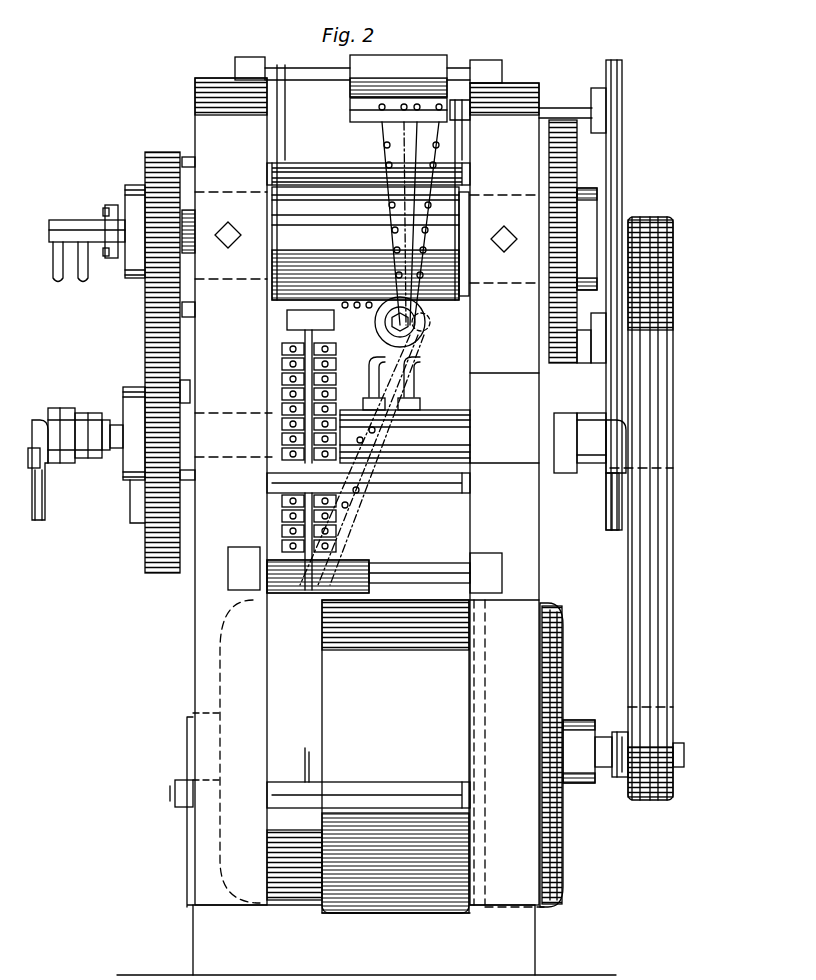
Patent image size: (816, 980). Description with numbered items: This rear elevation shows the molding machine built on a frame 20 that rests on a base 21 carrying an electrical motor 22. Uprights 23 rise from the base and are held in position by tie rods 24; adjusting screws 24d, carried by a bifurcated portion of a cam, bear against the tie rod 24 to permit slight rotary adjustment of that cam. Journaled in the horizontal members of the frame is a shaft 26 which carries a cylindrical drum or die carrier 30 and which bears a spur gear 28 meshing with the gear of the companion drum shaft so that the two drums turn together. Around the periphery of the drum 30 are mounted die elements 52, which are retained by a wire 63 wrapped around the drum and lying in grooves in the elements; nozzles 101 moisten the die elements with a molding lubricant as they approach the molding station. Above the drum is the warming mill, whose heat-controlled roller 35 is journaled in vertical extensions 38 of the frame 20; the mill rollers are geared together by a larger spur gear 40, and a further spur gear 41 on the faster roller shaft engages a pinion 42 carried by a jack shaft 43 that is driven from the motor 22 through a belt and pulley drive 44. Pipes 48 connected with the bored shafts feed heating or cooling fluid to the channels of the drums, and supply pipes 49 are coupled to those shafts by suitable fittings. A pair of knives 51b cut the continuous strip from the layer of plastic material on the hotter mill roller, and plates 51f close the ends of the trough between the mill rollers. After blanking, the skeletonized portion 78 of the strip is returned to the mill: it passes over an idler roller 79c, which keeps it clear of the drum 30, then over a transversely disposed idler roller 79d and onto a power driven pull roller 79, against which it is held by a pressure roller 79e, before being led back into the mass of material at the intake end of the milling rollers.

The frame 20 is at (176, 638).
The base 21 is at (215, 938).
The electrical motor 22 is at (560, 615).
The uprights 23 is at (200, 685).
The tie rods 24 is at (415, 490).
The adjusting screws 24d is at (54, 970).
The shaft 26 is at (418, 430).
The spur gear 28 is at (150, 545).
The cylindrical drum or die carrier 30 is at (270, 360).
The roller 35 is at (322, 195).
The vertical extensions 38 is at (205, 113).
The larger spur gear 40 is at (158, 152).
The spur gear 41 is at (563, 130).
The pinion 42 is at (547, 345).
The jack shaft 43 is at (582, 360).
The belt and pulley drive 44 is at (686, 510).
The pipes 48 is at (425, 392).
The supply pipes 49 is at (47, 505).
The knives 51b is at (345, 262).
The plates 51f is at (274, 98).
The die elements 52 is at (282, 392).
The wire 63 is at (290, 438).
The skeletonized portion 78 is at (388, 205).
The pull roller 79 is at (365, 110).
The idler roller 79c is at (372, 590).
The idler roller 79d is at (380, 333).
The pressure roller 79e is at (434, 65).
The nozzles 101 is at (270, 330).